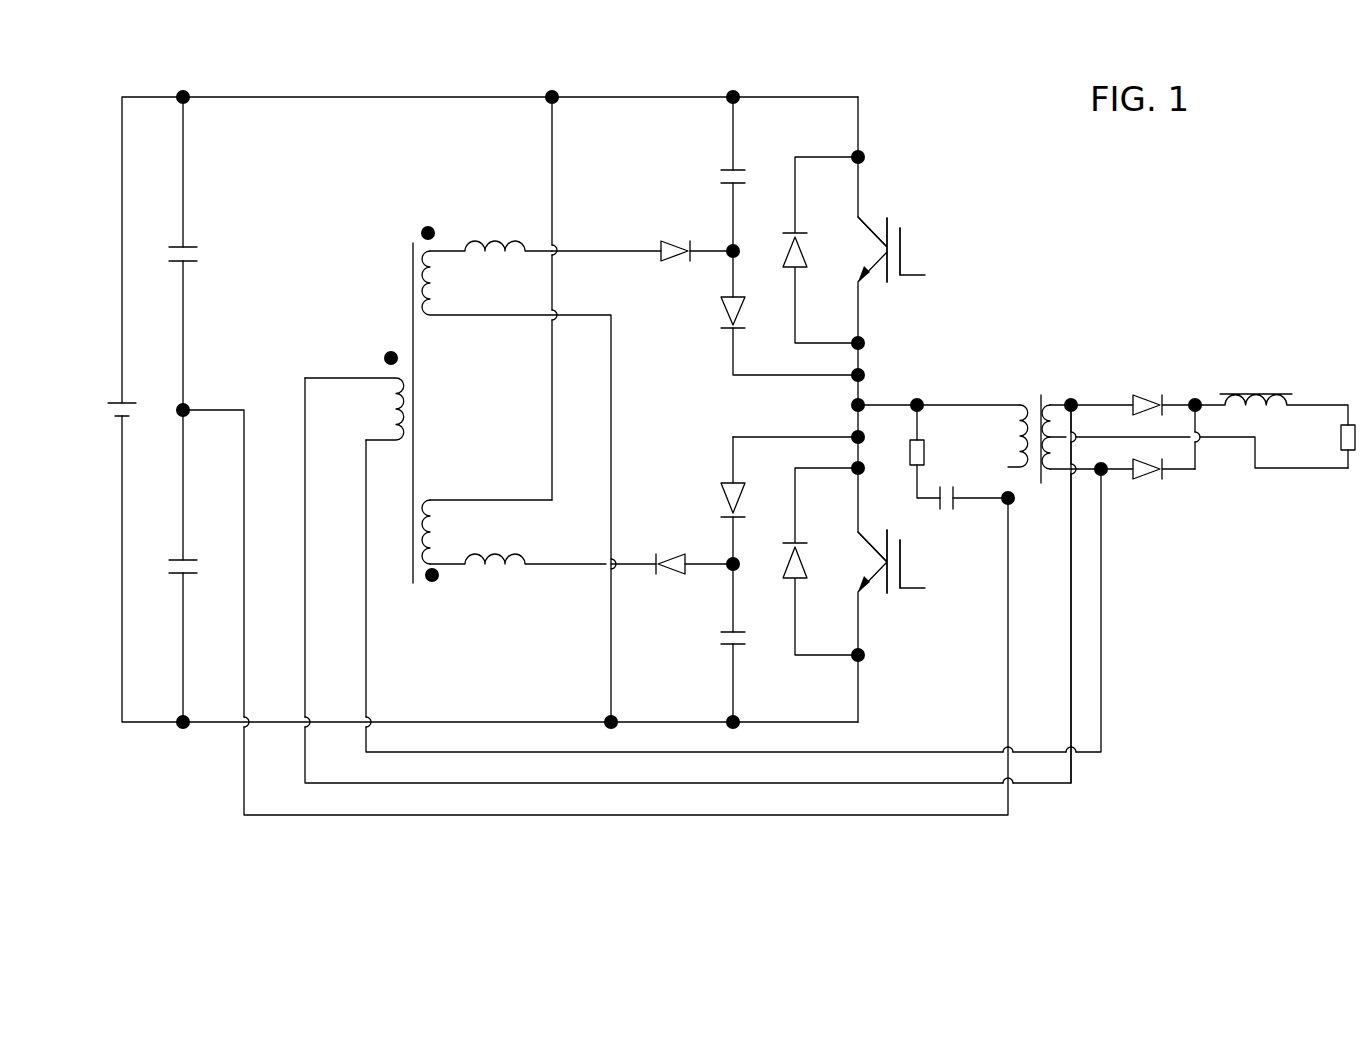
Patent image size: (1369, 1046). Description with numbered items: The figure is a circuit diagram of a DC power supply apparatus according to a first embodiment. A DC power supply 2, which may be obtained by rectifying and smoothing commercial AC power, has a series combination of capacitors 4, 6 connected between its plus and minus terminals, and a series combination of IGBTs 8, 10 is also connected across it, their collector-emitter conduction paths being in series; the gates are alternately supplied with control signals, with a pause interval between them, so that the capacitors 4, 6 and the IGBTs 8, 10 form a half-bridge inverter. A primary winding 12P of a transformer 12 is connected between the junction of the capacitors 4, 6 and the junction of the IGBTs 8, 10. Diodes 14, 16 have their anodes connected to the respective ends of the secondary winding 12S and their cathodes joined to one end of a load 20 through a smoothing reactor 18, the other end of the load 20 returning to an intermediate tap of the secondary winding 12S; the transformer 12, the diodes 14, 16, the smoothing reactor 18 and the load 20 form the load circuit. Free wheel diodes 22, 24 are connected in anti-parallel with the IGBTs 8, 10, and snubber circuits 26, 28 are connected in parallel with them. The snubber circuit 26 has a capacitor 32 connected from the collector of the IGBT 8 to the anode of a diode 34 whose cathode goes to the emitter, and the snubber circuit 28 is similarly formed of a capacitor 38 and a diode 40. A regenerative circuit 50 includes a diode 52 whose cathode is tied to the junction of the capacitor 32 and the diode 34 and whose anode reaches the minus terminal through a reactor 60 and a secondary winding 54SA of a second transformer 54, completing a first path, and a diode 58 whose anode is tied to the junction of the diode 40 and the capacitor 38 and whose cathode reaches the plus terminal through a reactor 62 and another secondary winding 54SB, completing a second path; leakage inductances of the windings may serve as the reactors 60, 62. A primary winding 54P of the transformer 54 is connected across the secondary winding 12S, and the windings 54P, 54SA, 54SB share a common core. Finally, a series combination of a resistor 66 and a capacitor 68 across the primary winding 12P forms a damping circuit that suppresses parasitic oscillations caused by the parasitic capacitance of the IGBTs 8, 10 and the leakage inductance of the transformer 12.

The DC power supply 2 is at (128, 403).
The capacitor 4 is at (195, 250).
The capacitor 6 is at (183, 560).
The IGBT 8 is at (872, 249).
The IGBT 10 is at (867, 561).
The transformer 12 is at (1068, 384).
The primary winding 12P is at (1016, 418).
The secondary winding 12S is at (1060, 462).
The diode 14 is at (1137, 403).
The diode 16 is at (1143, 474).
The smoothing reactor 18 is at (1238, 403).
The load 20 is at (1343, 440).
The free wheel diode 22 is at (800, 258).
The free wheel diode 24 is at (792, 550).
The snubber circuit 26 is at (629, 235).
The snubber circuit 28 is at (588, 611).
The capacitor 32 is at (730, 170).
The diode 34 is at (727, 320).
The capacitor 38 is at (726, 634).
The diode 40 is at (733, 488).
The regenerative circuit 50 is at (596, 417).
The diode 52 is at (681, 262).
The transformer 54 is at (424, 223).
The primary winding 54P is at (392, 395).
The secondary winding 54SA is at (447, 290).
The secondary winding 54SB is at (444, 515).
The diode 58 is at (668, 555).
The reactor 60 is at (490, 250).
The reactor 62 is at (500, 565).
The resistor 66 is at (920, 455).
The capacitor 68 is at (952, 505).